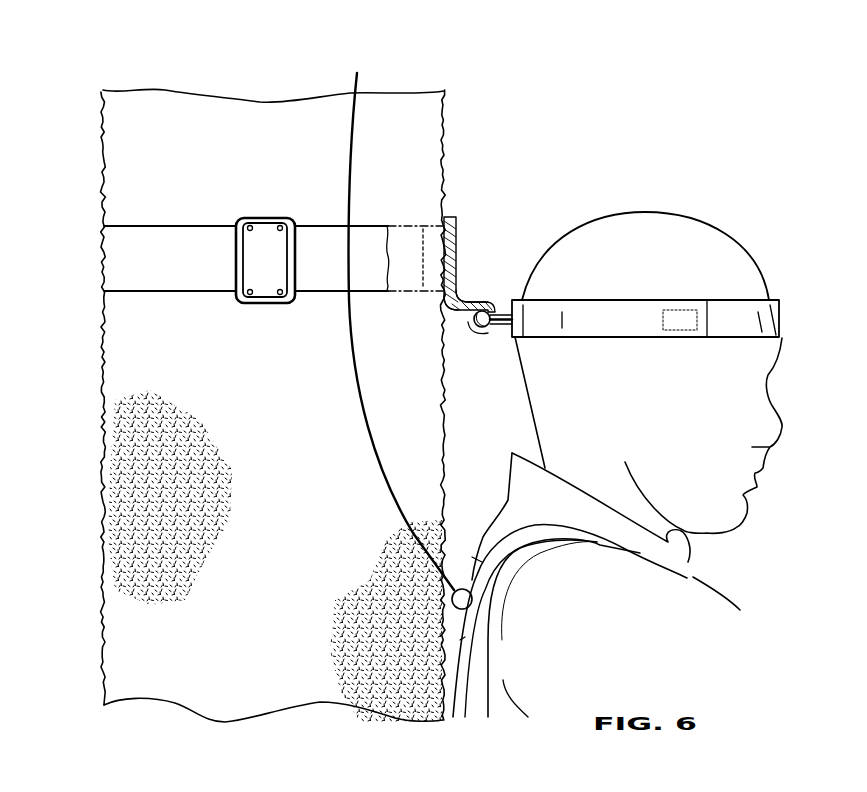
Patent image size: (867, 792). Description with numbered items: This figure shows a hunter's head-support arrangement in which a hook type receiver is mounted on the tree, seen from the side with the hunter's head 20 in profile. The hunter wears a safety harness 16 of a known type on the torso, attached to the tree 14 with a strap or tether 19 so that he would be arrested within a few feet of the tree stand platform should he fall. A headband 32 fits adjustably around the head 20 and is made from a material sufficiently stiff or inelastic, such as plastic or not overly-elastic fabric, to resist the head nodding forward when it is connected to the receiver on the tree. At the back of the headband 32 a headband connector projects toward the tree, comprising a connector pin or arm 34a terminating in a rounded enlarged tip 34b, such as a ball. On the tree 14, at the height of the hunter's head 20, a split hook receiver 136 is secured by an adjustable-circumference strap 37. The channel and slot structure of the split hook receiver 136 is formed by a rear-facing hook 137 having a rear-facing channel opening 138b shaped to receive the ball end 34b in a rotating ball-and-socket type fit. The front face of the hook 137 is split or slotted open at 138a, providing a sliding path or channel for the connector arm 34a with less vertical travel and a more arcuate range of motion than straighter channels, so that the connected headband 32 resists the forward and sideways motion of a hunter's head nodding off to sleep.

The tree 14 is at (170, 115).
The safety harness 16 is at (477, 668).
The strap or tether 19 is at (347, 137).
The head 20 is at (617, 238).
The headband 32 is at (637, 302).
The connector pin or arm 34a is at (497, 331).
The rounded enlarged tip 34b is at (475, 330).
The adjustable-circumference strap 37 is at (122, 262).
The split hook receiver 136 is at (462, 232).
The rear-facing hook 137 is at (478, 302).
The split or slot 138a is at (497, 298).
The rear-facing channel opening 138b is at (467, 317).